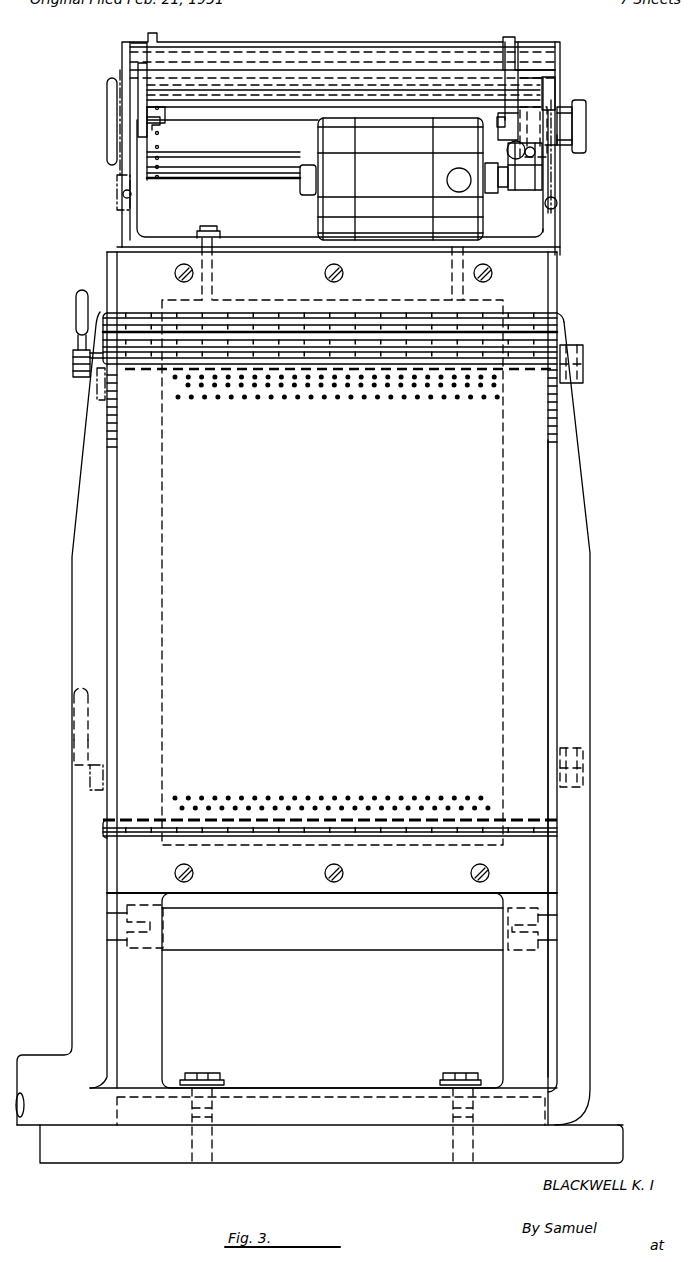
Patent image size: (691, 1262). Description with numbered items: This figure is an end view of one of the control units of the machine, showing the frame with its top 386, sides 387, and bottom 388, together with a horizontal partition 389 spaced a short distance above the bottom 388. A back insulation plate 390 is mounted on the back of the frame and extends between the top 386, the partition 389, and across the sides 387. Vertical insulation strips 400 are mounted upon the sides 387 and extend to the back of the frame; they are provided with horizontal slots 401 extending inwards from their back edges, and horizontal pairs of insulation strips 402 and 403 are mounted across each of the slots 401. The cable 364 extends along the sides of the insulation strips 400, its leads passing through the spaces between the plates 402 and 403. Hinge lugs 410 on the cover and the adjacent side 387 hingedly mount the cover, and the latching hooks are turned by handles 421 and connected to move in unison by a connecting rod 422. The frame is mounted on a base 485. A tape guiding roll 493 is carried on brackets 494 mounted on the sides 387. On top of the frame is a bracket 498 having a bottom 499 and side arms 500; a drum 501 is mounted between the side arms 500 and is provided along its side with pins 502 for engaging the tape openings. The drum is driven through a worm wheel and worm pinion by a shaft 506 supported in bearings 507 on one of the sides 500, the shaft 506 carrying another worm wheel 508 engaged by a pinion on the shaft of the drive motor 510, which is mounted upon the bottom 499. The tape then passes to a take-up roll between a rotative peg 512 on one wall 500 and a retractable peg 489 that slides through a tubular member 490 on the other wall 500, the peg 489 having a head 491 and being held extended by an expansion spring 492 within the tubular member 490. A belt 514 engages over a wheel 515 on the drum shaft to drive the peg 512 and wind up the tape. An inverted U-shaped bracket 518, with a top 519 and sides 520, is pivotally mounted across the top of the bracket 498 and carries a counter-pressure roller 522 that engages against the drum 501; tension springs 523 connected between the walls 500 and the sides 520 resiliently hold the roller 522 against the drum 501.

The cable 364 is at (575, 845).
The top 386 is at (497, 287).
The sides 387 is at (158, 520).
The bottom 388 is at (260, 1085).
The horizontal partition 389 is at (257, 877).
The back insulation plate 390 is at (527, 568).
The vertical insulation strips 400 is at (108, 595).
The horizontal slots 401 is at (560, 313).
The horizontal insulation strip 402 is at (518, 314).
The horizontal insulation strip 403 is at (517, 367).
The hinge lugs 410 is at (583, 345).
The handle 421 is at (78, 315).
The connecting rod 422 is at (100, 392).
The base 485 is at (593, 1130).
The retractable pivot 489 is at (503, 118).
The tubular housing 490 is at (565, 147).
The head 491 is at (586, 108).
The spring 492 is at (565, 110).
The tape guiding roll 493 is at (368, 937).
The brackets 494 is at (108, 920).
The bracket 498 is at (118, 238).
The bottom 499 is at (240, 237).
The side arms 500 is at (122, 228).
The drum 501 is at (205, 175).
The pins 502 is at (150, 180).
The shaft 506 is at (535, 157).
The bearings 507 is at (538, 190).
The worm wheel 508 is at (518, 164).
The drive motor 510 is at (381, 130).
The rotative peg 512 is at (150, 110).
The belt 514 is at (118, 78).
The wheel 515 is at (105, 107).
The inverted U-shaped bracket 518 is at (265, 42).
The top 519 is at (240, 46).
The sides 520 is at (118, 180).
The counter-pressure roller 522 is at (313, 42).
The tension springs 523 is at (123, 193).